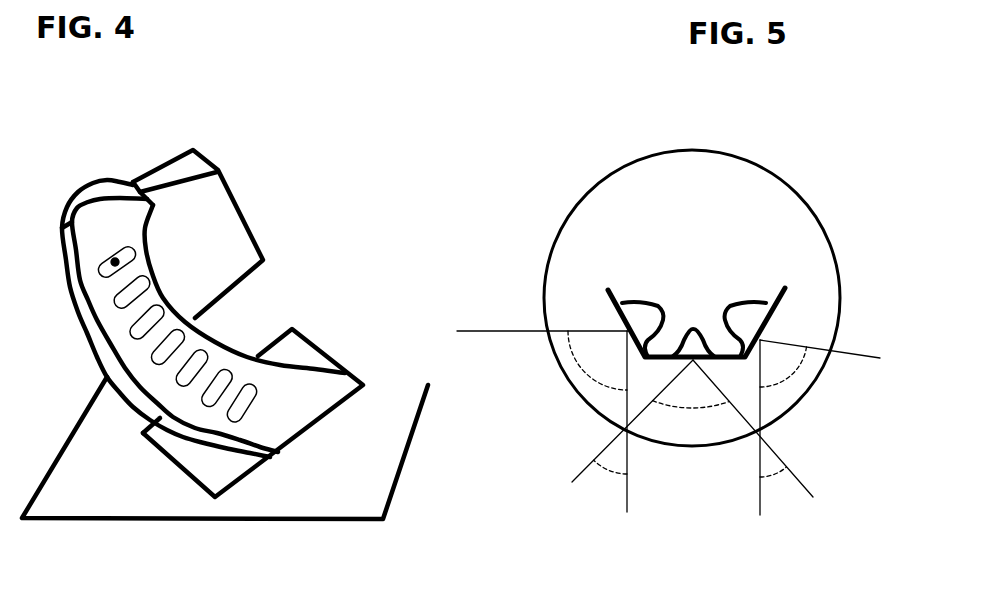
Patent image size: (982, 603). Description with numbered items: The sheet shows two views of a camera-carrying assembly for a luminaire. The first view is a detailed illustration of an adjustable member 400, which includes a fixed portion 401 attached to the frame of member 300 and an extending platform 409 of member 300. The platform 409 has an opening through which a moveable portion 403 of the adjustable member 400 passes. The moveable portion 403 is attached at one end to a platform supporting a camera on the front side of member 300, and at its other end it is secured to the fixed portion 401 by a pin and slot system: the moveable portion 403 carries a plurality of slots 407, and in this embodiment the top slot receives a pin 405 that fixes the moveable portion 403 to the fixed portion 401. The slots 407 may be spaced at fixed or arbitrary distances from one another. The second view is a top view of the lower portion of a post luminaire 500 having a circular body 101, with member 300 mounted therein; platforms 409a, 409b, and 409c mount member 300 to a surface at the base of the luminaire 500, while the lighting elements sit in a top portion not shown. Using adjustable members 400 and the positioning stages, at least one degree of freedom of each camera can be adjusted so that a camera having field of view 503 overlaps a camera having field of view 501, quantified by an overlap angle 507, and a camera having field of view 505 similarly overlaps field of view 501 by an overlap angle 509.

In FIG. 4, the adjustable member 400 is at (77, 76).
In FIG. 4, the fixed portion 401 is at (215, 203).
In FIG. 4, the moveable portion 403 is at (229, 345).
In FIG. 4, the pin 405 is at (115, 256).
In FIG. 4, the slots 407 is at (258, 407).
In FIG. 4, the extending platform 409 is at (225, 448).
In FIG. 5, the post luminaire 500 is at (731, 81).
In FIG. 5, the circular body 101 is at (600, 176).
In FIG. 5, the member 300 is at (613, 287).
In FIG. 5, the platform 409a is at (655, 304).
In FIG. 5, the platform 409b is at (693, 328).
In FIG. 5, the platform 409c is at (740, 304).
In FIG. 5, the field of view 501 is at (690, 408).
In FIG. 5, the field of view 503 is at (592, 370).
In FIG. 5, the field of view 505 is at (793, 372).
In FIG. 5, the overlap angle 507 is at (604, 468).
In FIG. 5, the overlap angle 509 is at (778, 473).